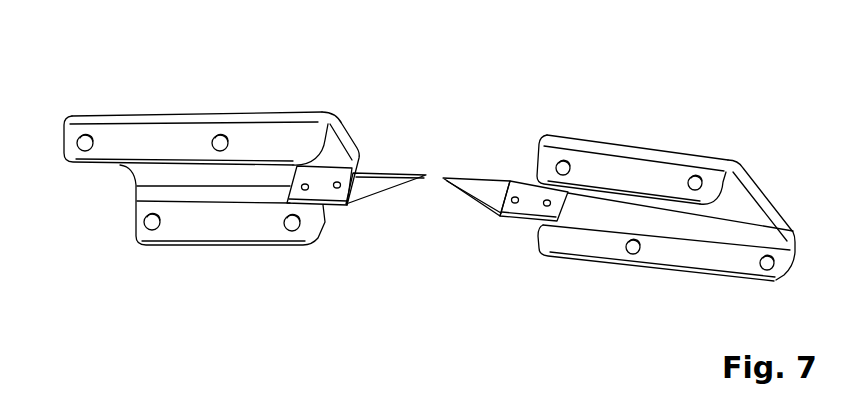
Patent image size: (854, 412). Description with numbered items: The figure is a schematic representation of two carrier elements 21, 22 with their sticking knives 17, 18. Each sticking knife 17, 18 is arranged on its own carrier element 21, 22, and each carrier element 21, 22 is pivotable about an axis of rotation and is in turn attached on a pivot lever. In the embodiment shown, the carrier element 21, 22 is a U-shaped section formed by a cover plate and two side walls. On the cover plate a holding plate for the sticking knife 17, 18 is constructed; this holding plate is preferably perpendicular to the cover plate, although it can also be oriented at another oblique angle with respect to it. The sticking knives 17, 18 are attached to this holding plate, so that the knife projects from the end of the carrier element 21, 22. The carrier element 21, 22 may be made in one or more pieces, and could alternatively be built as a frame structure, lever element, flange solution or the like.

The sticking knife 17 is at (475, 222).
The sticking knife 18 is at (373, 222).
The carrier element 21 is at (166, 93).
The carrier element 22 is at (690, 118).